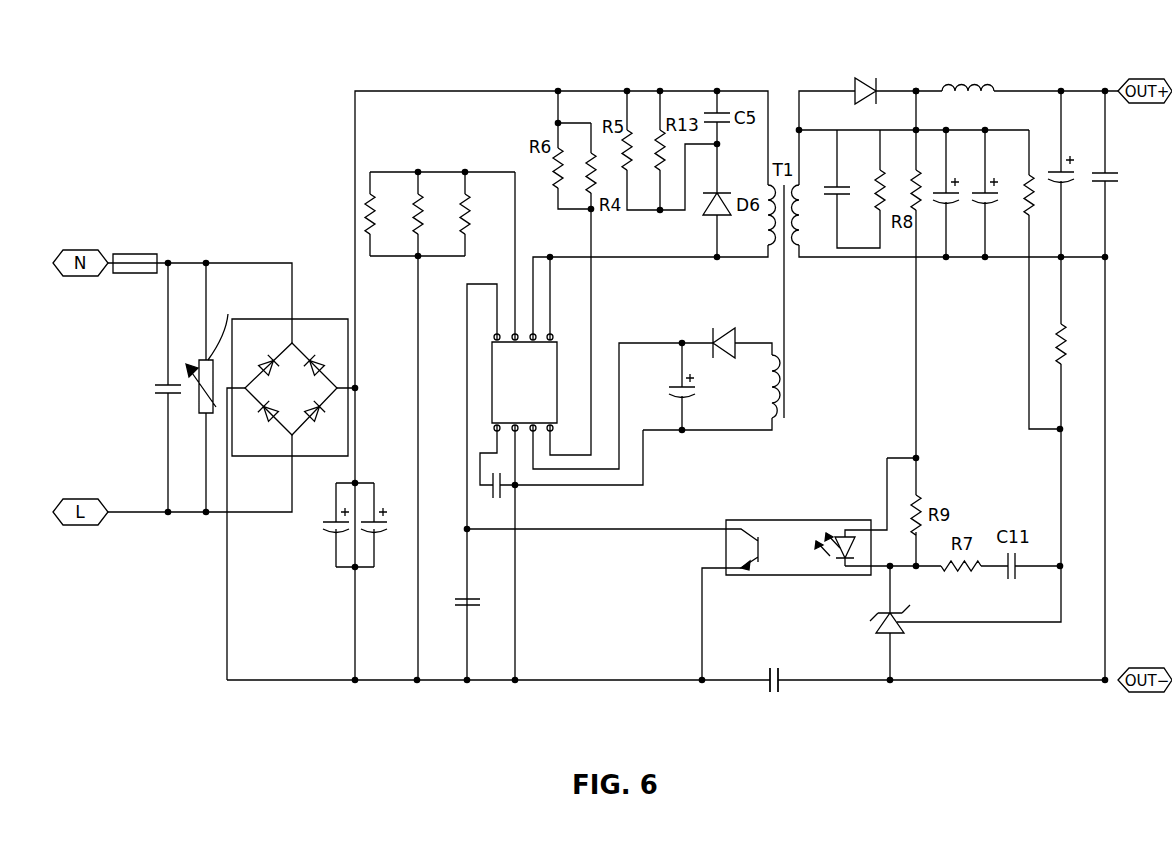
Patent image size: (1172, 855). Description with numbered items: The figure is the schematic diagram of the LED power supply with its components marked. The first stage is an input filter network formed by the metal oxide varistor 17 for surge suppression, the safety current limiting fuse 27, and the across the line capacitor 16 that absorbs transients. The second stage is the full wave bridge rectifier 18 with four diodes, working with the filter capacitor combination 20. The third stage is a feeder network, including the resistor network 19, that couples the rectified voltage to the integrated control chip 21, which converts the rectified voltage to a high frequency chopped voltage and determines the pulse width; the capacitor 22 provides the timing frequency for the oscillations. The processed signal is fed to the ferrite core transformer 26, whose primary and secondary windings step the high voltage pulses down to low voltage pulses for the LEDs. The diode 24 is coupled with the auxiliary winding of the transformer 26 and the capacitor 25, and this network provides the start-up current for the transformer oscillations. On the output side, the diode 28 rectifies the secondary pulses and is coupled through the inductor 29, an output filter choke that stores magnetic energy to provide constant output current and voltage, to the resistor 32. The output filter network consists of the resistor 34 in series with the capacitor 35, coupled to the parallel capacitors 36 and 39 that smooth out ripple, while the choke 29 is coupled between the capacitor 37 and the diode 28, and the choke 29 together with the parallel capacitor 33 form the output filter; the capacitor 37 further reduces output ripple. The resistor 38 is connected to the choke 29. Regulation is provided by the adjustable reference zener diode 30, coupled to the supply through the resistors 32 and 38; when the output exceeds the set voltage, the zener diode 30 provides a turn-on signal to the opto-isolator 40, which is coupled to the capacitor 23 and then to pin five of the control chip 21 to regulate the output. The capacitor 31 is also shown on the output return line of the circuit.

The across the line capacitor 16 is at (158, 396).
The metal oxide varistor 17 is at (229, 296).
The bridge rectifier 18 is at (305, 318).
The resistor network R1-R3 19 is at (418, 170).
The filter capacitor combination 20 is at (360, 483).
The integrated control chip 21 is at (510, 385).
The capacitor 22 is at (505, 493).
The capacitor 23 is at (470, 607).
The diode 24 is at (725, 328).
The capacitor 25 is at (690, 396).
The transformer 26 is at (782, 155).
The safety current limiting fuse 27 is at (152, 252).
The diode 28 is at (855, 85).
The inductor 29 is at (995, 88).
The adjustable reference zener diode 30 is at (897, 633).
The capacitor C1 31 is at (783, 688).
The resistor 32 is at (1053, 350).
The capacitor 33 is at (1115, 170).
The resistor 34 is at (886, 192).
The capacitor 35 is at (843, 186).
The capacitor 36 is at (940, 205).
The capacitor 37 is at (1072, 175).
The resistor 38 is at (1037, 182).
The capacitor 39 is at (980, 205).
The opto-isolator 40 is at (835, 520).